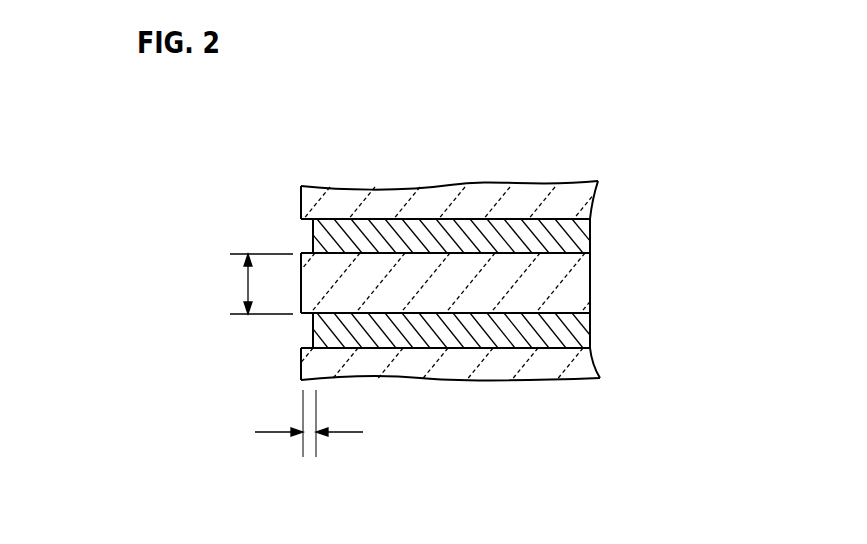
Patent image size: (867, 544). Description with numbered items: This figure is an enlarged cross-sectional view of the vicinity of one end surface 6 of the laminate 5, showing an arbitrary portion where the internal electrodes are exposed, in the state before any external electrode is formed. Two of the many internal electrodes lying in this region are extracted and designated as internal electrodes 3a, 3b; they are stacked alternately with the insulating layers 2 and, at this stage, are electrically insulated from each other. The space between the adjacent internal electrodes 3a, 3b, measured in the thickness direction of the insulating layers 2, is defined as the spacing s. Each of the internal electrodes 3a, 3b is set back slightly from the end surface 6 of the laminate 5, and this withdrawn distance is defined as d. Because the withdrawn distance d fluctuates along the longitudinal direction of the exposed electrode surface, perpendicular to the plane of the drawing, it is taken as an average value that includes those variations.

The insulating layers 2 is at (522, 307).
The internal electrode 3a is at (587, 232).
The internal electrode 3b is at (587, 330).
The laminate 5 is at (537, 178).
The end surface 6 is at (301, 200).
The space between adjacent internal electrodes s is at (248, 282).
The withdrawn distance d is at (267, 432).